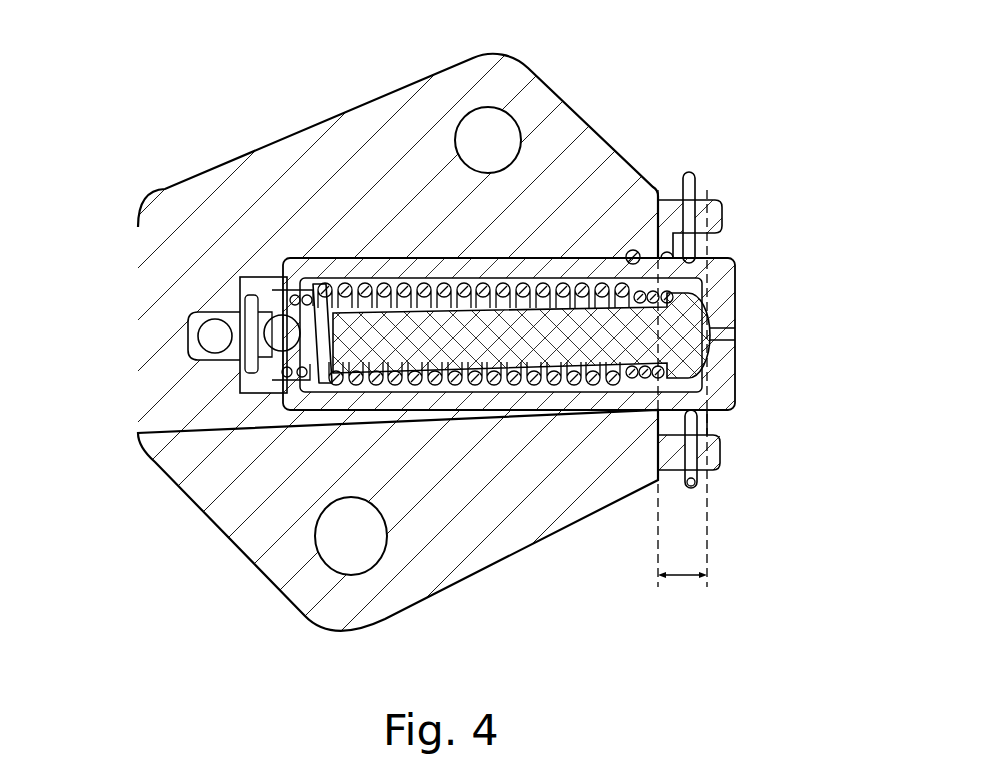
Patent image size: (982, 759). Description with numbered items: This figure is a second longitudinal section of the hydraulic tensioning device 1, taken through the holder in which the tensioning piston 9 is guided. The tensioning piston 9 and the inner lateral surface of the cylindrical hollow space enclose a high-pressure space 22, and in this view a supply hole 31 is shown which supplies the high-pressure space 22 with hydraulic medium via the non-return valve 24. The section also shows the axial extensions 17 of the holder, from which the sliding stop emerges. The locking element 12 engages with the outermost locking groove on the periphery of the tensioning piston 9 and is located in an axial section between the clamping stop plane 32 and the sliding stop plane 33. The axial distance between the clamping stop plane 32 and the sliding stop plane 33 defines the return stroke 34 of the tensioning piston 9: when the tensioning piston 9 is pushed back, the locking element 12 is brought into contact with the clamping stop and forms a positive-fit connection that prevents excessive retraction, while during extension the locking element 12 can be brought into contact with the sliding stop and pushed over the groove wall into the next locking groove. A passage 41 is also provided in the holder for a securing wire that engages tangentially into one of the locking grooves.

The tensioning device 1 is at (818, 125).
The tensioning piston 9 is at (613, 397).
The locking element 12 is at (697, 184).
The axial extensions 17 is at (722, 450).
The high-pressure space 22 is at (528, 397).
The non-return valve 24 is at (277, 327).
The supply hole 31 is at (220, 335).
The clamping stop plane 32 is at (658, 553).
The sliding stop plane 33 is at (708, 537).
The return stroke 34 is at (682, 592).
The passage 41 is at (633, 250).